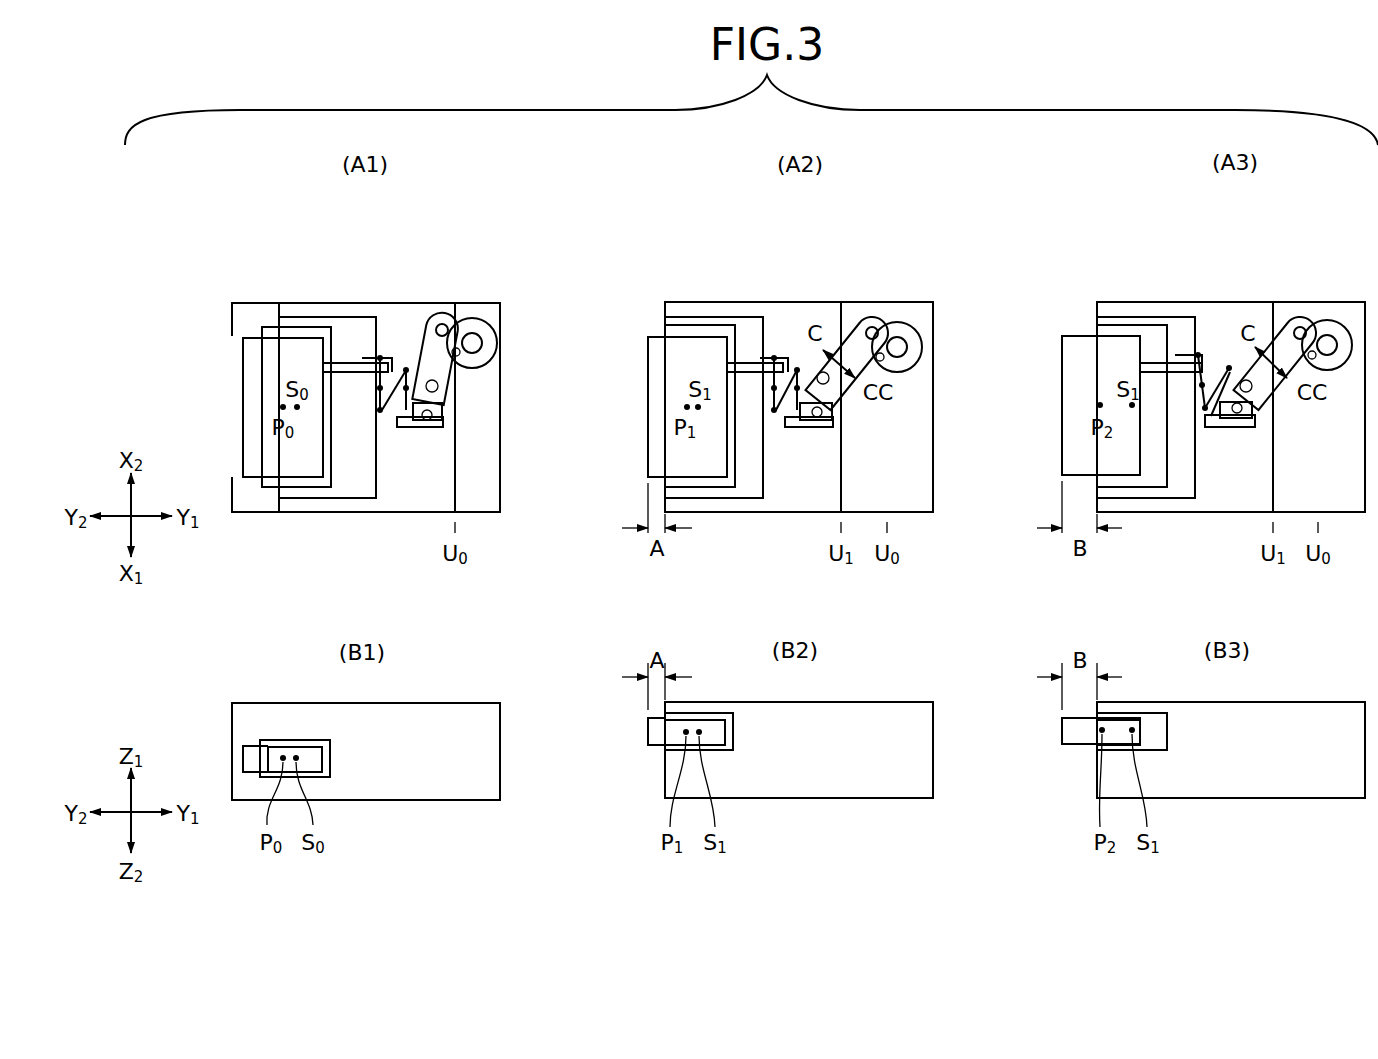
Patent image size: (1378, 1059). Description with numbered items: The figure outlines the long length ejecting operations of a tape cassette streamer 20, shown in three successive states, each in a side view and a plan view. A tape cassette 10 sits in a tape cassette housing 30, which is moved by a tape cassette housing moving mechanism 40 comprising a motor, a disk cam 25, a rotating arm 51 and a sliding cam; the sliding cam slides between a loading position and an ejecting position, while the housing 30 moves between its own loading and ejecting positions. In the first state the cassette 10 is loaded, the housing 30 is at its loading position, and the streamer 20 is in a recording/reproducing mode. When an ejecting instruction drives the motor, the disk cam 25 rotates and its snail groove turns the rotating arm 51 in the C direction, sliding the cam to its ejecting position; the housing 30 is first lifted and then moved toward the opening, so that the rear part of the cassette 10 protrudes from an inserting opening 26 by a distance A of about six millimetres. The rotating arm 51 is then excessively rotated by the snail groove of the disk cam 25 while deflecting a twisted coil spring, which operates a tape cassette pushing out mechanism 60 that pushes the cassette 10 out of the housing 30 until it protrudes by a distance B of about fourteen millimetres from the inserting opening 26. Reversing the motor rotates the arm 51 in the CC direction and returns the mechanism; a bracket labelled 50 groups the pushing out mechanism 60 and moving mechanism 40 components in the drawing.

The tape cassette 10 is at (243, 405).
The tape cassette streamer 20 is at (484, 194).
The disk cam 25 is at (474, 328).
The inserting opening 26 is at (231, 336).
The tape cassette housing 30 is at (303, 323).
The tape cassette housing moving mechanism 40 is at (417, 318).
The lock mechanism 50 is at (367, 252).
The rotating arm 51 is at (445, 372).
The tape cassette pushing out mechanism 60 is at (384, 330).